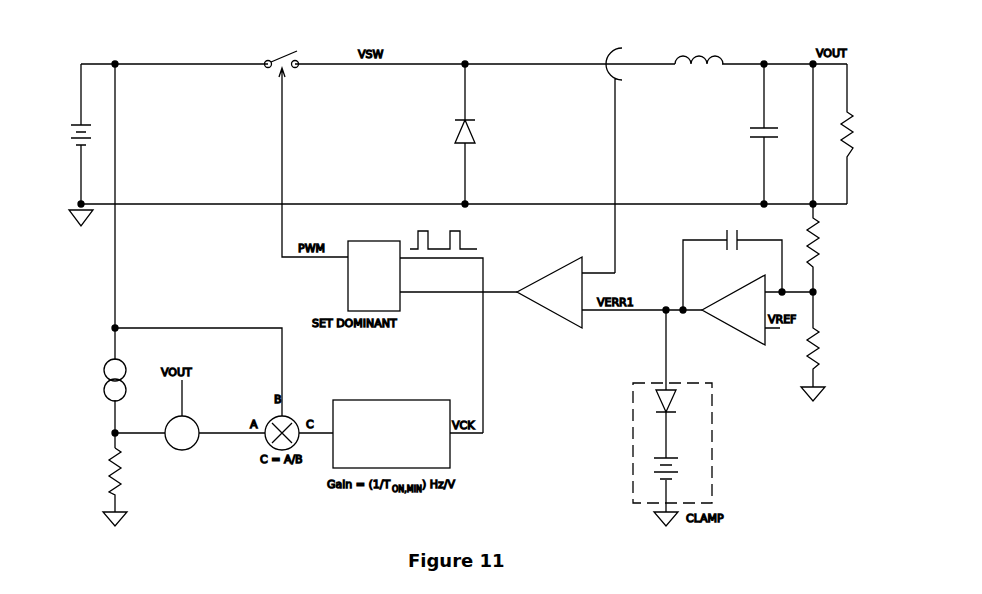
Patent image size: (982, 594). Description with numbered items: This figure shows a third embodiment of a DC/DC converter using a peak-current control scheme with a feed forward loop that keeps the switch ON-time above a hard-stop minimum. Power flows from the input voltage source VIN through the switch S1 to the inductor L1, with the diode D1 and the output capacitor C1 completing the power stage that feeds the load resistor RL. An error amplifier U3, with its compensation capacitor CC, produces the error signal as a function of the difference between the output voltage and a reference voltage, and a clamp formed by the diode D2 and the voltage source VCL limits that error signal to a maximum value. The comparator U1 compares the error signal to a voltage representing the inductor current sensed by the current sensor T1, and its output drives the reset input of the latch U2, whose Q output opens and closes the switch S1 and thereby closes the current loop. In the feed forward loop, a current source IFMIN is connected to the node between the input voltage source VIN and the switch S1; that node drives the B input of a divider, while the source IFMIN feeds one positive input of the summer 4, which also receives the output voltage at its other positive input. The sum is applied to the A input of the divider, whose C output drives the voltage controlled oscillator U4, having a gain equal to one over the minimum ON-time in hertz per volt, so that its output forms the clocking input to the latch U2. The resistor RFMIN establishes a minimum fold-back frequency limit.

The input voltage source VIN is at (67, 135).
The switch S1 is at (282, 52).
The diode D1 is at (476, 134).
The current sensor T1 is at (613, 154).
The inductor L1 is at (699, 51).
The output capacitor C1 is at (773, 134).
The load resistor RL is at (857, 134).
The comparator U1 is at (609, 292).
The latch U2 is at (374, 268).
The error amplifier U3 is at (757, 305).
The voltage controlled oscillator U4 is at (391, 426).
The compensation capacitor CC is at (732, 262).
The current source IFMIN is at (128, 380).
The resistor RFMIN is at (130, 487).
The summer 4 is at (192, 421).
The diode D2 is at (677, 405).
The voltage source VCL is at (680, 468).